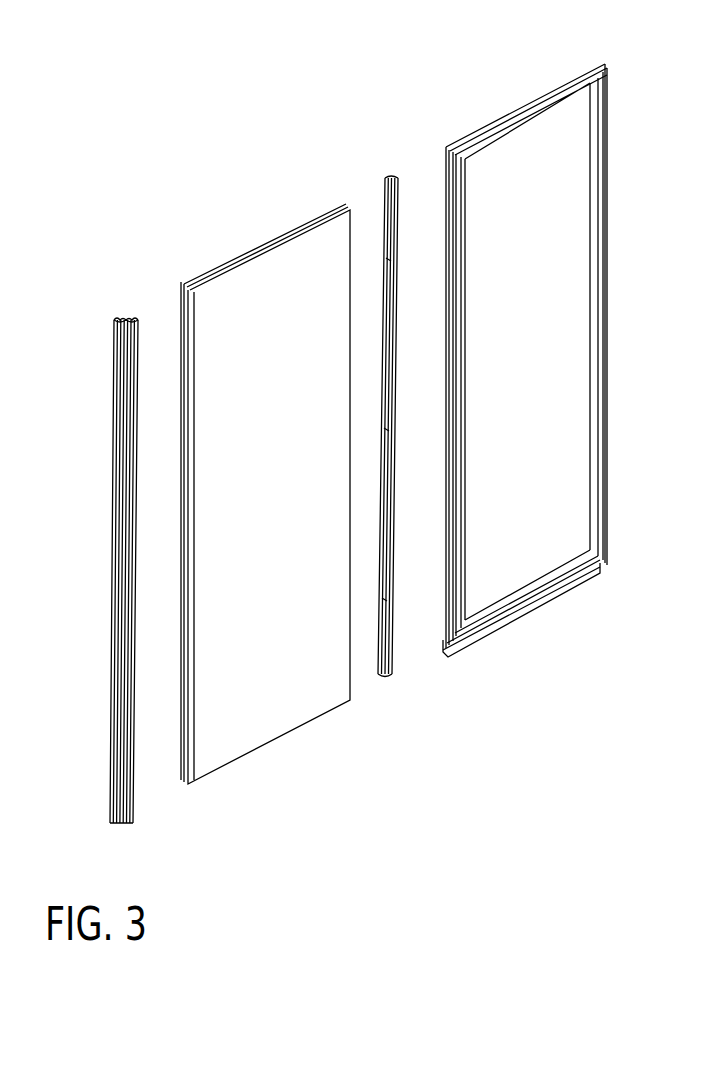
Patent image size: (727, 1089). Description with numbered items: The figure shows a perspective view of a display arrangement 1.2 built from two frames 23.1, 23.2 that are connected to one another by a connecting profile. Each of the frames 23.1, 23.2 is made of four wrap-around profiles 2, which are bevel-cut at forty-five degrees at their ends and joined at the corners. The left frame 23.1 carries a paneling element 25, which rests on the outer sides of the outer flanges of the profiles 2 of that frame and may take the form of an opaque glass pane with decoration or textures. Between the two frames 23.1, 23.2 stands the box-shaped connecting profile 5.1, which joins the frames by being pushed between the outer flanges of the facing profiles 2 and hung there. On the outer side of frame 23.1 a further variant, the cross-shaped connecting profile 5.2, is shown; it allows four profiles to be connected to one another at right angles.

The display arrangement 1.2 is at (172, 77).
The wrap-around profile 2 is at (181, 778).
The connecting profile 5.1 is at (392, 175).
The connecting profile 5.2 is at (125, 318).
The frame 23.1 is at (196, 246).
The frame 23.2 is at (455, 102).
The paneling element 25 is at (253, 737).